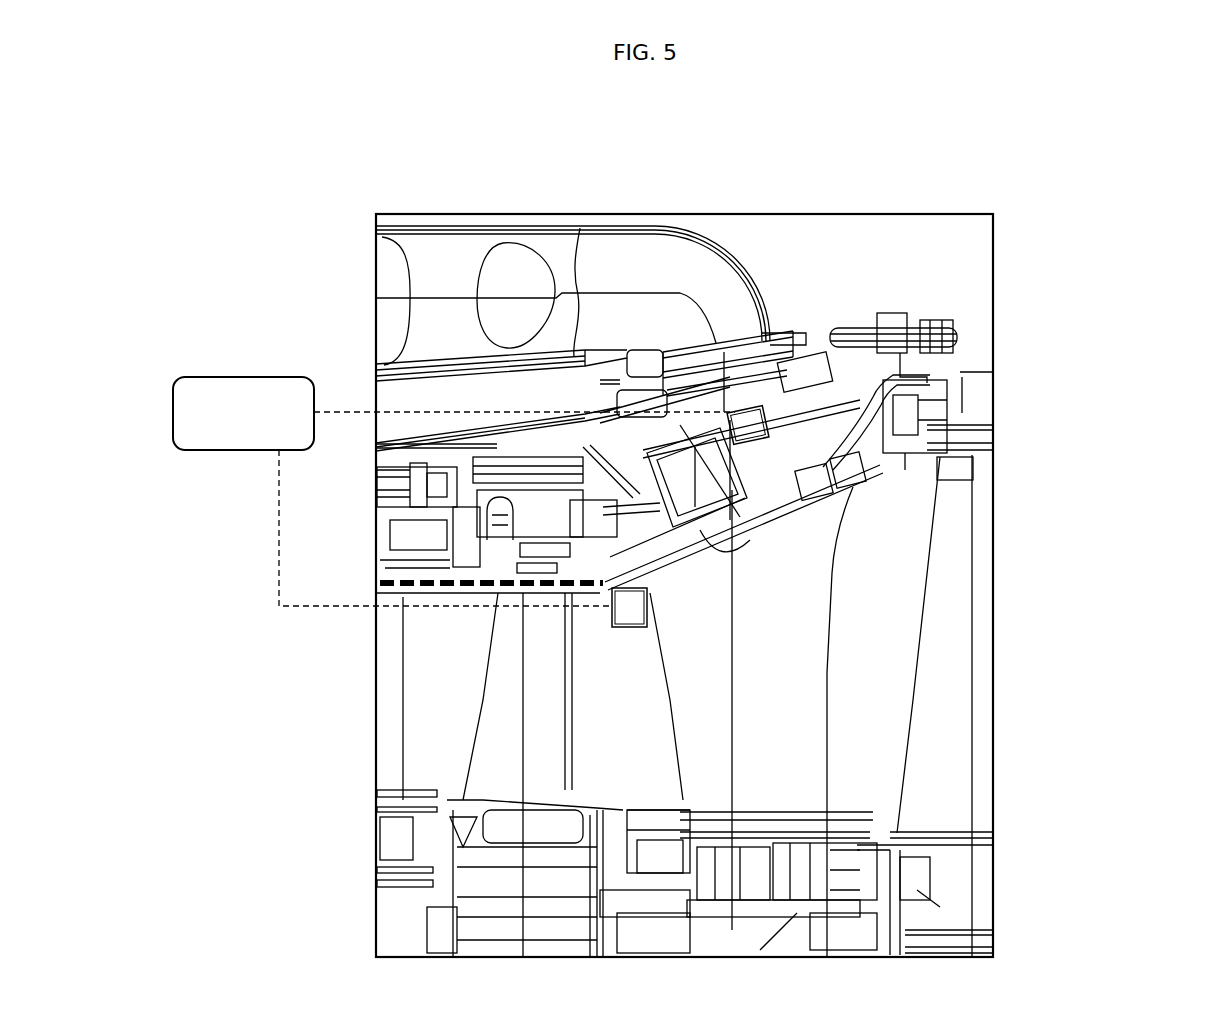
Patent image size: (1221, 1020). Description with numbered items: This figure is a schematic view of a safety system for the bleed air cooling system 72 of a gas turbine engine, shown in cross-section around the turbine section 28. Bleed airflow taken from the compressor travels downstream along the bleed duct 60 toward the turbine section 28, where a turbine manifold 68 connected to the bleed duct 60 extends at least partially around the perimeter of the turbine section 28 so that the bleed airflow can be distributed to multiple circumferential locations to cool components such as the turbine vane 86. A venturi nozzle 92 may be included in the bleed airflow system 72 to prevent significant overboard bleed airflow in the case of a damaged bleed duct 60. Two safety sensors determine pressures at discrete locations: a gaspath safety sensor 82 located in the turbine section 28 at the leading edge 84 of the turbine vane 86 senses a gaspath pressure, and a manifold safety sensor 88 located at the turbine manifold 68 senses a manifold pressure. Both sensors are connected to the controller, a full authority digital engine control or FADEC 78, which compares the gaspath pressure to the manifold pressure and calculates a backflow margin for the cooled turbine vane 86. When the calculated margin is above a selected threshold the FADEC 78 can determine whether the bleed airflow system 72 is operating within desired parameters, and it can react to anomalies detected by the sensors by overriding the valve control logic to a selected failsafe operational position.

The turbine section 28 is at (1090, 421).
The bleed duct 60 is at (462, 275).
The bleed air cooling system 72 is at (672, 190).
The venturi nozzle 92 is at (740, 352).
The turbine manifold 68 is at (809, 497).
The manifold safety sensor 88 is at (738, 435).
The gaspath safety sensor 82 is at (640, 618).
The turbine vane 86 is at (751, 671).
The leading edge 84 is at (668, 698).
The full authority digital engine control (FADEC) 78 is at (223, 426).